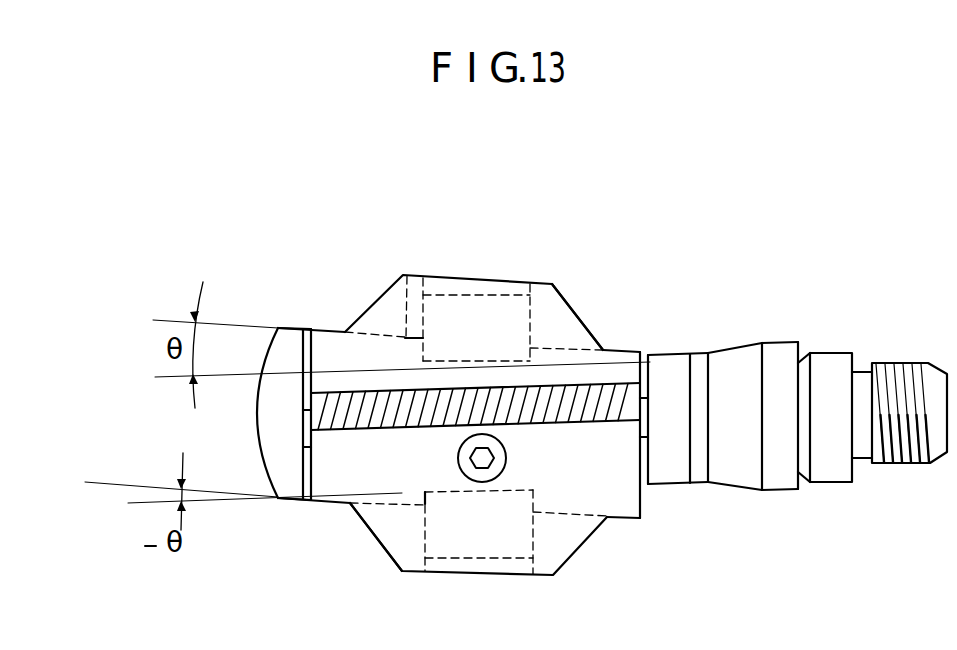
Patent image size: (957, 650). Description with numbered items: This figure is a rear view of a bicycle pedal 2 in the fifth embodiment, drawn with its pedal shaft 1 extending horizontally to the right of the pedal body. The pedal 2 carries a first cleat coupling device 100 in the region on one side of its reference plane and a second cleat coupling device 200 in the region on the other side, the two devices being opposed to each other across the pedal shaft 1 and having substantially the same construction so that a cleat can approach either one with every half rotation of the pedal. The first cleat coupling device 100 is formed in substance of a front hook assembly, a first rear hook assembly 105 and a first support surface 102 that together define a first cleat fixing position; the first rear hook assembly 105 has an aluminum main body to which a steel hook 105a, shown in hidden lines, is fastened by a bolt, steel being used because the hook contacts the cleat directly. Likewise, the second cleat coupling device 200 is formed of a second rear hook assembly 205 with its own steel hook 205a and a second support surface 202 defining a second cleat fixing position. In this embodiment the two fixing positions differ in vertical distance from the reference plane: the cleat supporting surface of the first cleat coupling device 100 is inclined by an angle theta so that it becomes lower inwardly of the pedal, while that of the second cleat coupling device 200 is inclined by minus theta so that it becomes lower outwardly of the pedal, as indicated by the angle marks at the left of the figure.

The pedal shaft 1 is at (908, 362).
The pedal 2 is at (299, 321).
The first cleat coupling device 100 is at (583, 275).
The first support surface 102 is at (407, 276).
The first rear hook assembly 105 is at (570, 327).
The steel hook 105a is at (499, 292).
The second cleat coupling device 200 is at (378, 583).
The second support surface 202 is at (560, 513).
The second rear hook assembly 205 is at (397, 538).
The steel hook 205a is at (472, 572).